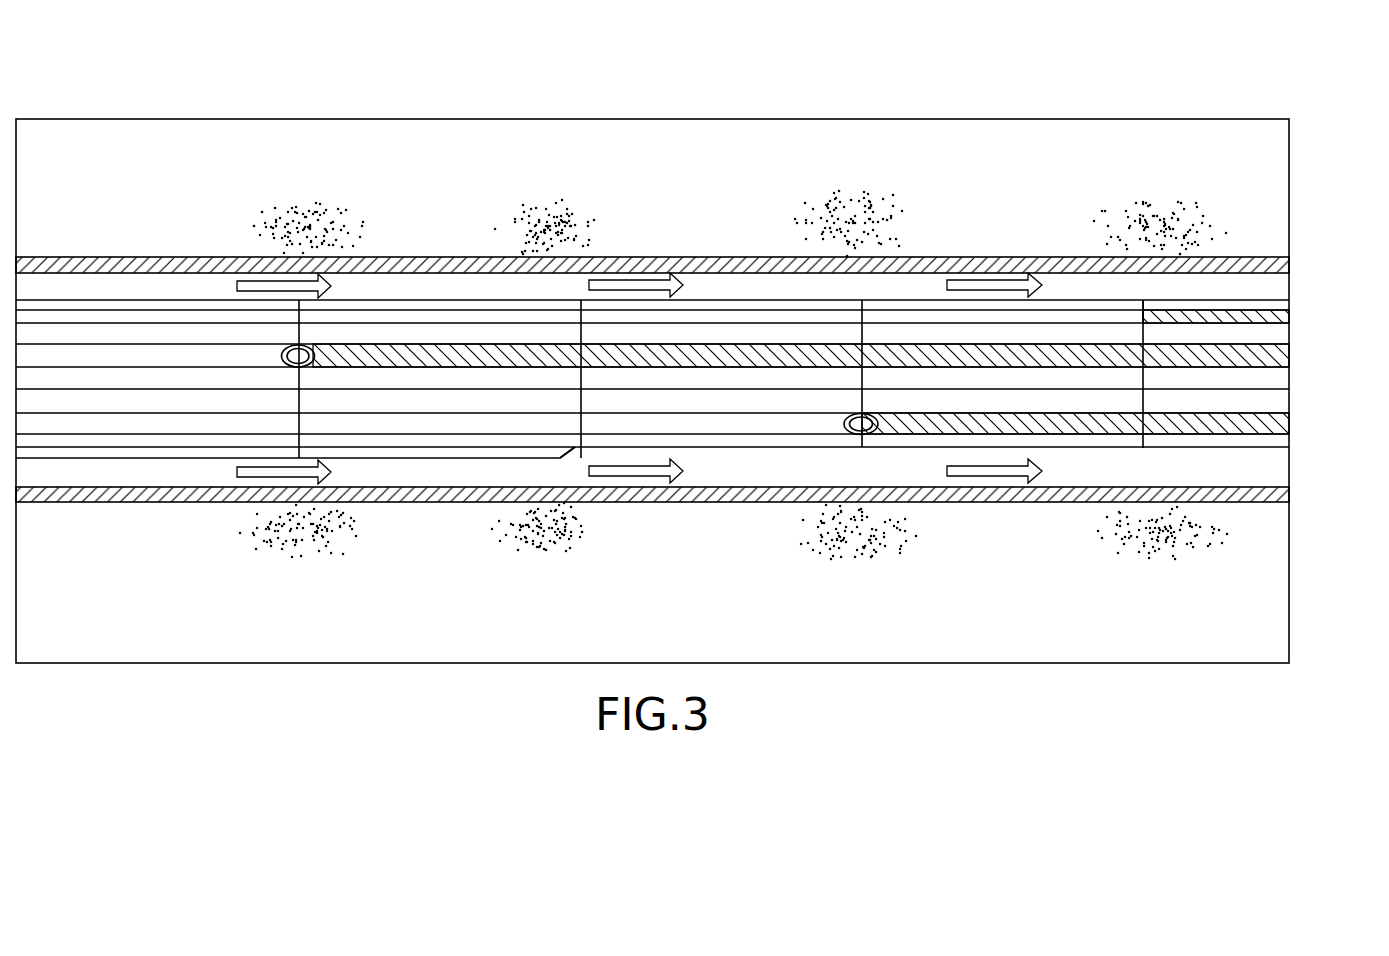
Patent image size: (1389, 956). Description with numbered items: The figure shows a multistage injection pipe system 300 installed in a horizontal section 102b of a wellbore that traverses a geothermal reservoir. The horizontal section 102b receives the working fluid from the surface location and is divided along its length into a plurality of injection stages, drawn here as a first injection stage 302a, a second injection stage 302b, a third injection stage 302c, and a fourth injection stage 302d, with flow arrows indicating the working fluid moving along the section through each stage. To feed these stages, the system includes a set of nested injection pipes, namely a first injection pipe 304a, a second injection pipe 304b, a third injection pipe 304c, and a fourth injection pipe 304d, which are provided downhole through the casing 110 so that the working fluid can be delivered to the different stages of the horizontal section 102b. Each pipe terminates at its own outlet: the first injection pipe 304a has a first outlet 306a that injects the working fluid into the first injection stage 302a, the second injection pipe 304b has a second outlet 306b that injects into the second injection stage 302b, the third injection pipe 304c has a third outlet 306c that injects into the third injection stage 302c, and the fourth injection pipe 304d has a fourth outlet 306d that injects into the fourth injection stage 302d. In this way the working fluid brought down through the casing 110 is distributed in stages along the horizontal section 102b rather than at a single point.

The multistage injection pipe system 300 is at (1255, 97).
The casing 110 is at (115, 268).
The horizontal section 102b is at (1290, 285).
The first injection stage 302a is at (423, 287).
The second injection stage 302b is at (743, 288).
The third injection stage 302c is at (967, 280).
The fourth injection stage 302d is at (1182, 290).
The first injection pipe 304a is at (207, 360).
The second injection pipe 304b is at (482, 447).
The third injection pipe 304c is at (757, 423).
The fourth injection pipe 304d is at (1067, 315).
The first outlet 306a is at (299, 345).
The second outlet 306b is at (567, 449).
The third outlet 306c is at (861, 436).
The fourth outlet 306d is at (1135, 317).